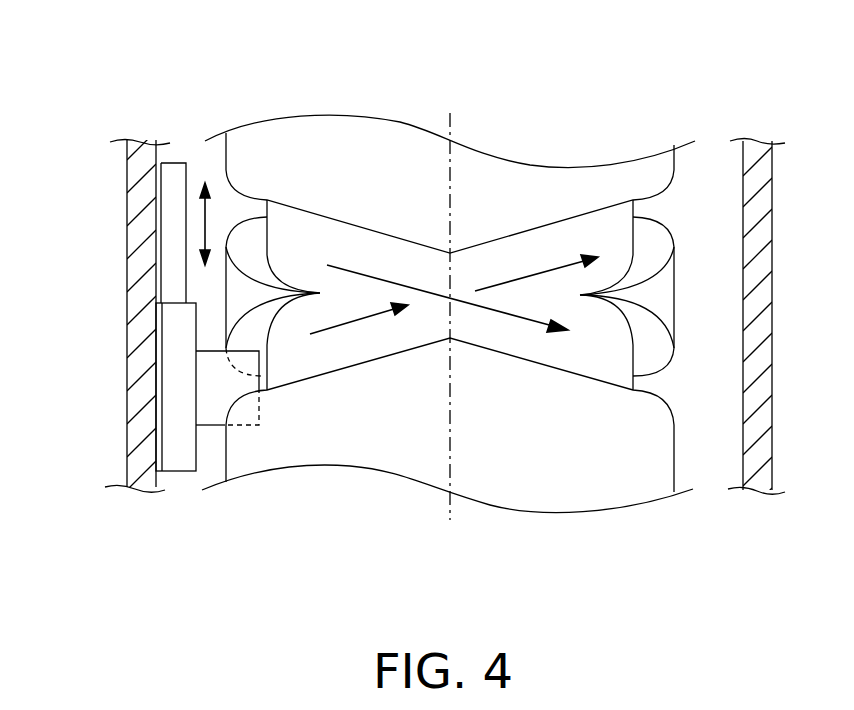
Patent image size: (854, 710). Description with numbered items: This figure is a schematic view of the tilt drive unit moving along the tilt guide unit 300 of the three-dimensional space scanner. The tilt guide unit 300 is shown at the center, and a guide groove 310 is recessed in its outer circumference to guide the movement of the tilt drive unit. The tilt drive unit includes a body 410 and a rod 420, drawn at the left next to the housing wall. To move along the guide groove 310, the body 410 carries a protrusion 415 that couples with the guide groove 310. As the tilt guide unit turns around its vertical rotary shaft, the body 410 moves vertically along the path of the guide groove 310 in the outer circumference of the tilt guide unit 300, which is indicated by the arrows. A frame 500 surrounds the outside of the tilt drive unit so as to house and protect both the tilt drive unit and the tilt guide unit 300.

The tilt guide unit 300 is at (528, 292).
The guide groove 310 is at (625, 232).
The body 410 is at (183, 463).
The protrusion 415 is at (240, 393).
The rod 420 is at (175, 168).
The frame 500 is at (135, 299).